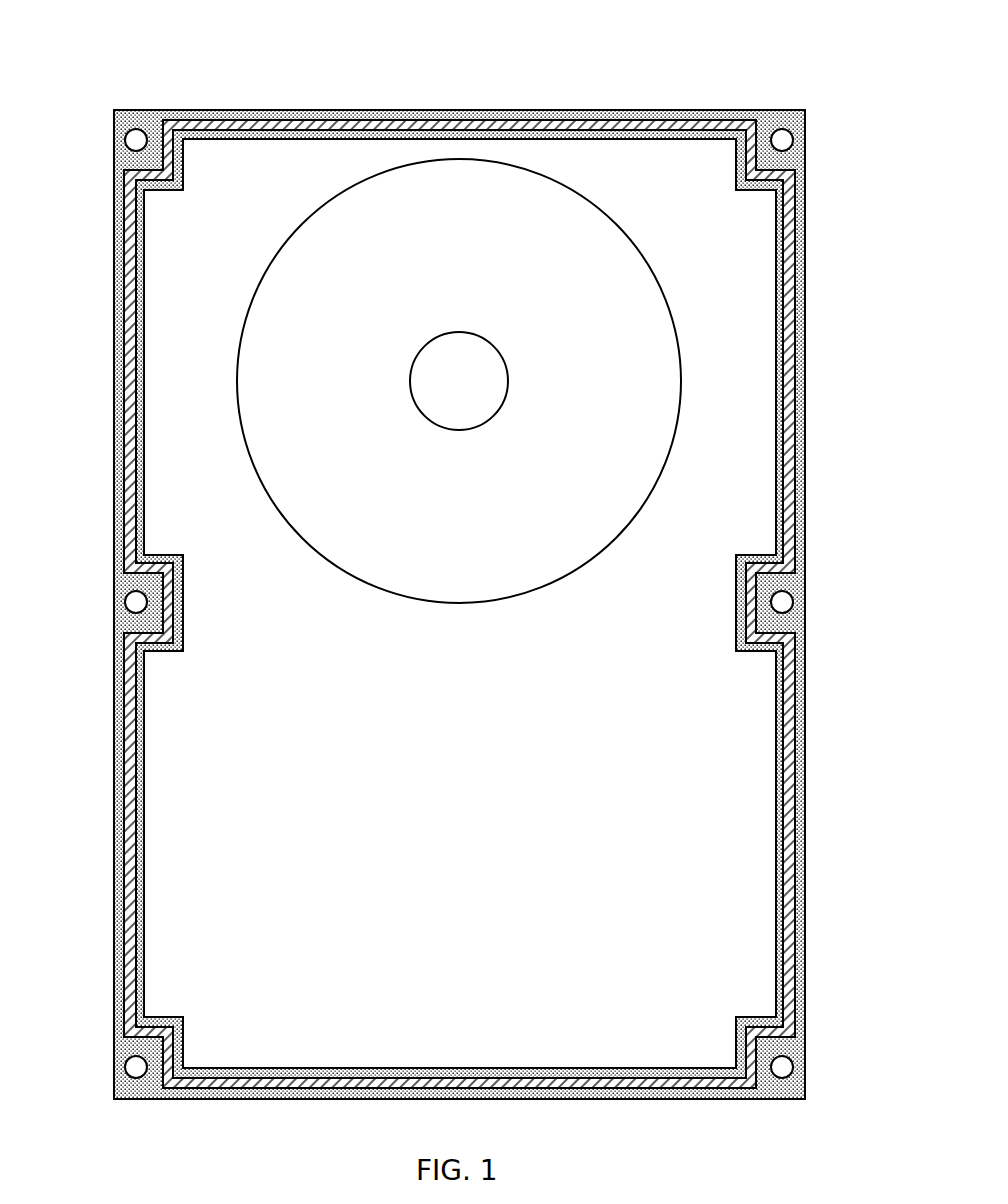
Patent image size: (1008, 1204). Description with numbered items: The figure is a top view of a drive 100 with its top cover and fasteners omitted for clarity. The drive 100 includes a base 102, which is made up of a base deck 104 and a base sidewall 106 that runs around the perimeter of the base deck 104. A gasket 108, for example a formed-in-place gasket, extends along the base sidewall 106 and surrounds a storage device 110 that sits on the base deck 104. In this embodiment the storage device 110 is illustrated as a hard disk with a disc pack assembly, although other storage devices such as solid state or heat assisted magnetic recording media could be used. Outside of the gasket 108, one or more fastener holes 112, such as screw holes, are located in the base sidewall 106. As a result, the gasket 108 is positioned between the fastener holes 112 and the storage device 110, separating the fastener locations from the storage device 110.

The drive 100 is at (468, 568).
The base 102 is at (468, 578).
The base deck 104 is at (676, 993).
The base sidewall 106 is at (802, 468).
The gasket 108 is at (792, 345).
The storage device 110 is at (608, 391).
The fastener holes 112 is at (136, 140).